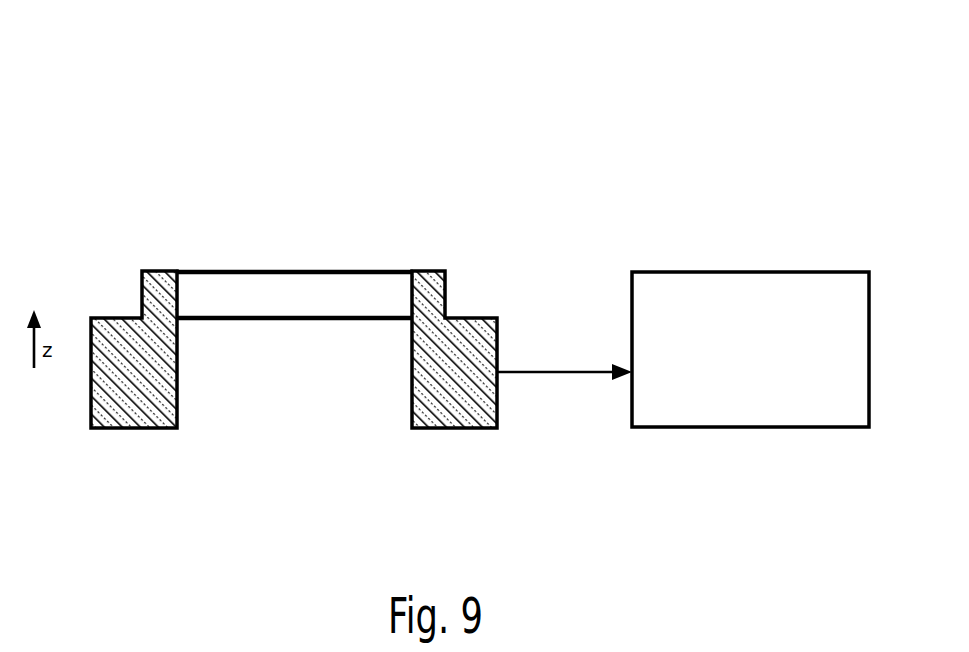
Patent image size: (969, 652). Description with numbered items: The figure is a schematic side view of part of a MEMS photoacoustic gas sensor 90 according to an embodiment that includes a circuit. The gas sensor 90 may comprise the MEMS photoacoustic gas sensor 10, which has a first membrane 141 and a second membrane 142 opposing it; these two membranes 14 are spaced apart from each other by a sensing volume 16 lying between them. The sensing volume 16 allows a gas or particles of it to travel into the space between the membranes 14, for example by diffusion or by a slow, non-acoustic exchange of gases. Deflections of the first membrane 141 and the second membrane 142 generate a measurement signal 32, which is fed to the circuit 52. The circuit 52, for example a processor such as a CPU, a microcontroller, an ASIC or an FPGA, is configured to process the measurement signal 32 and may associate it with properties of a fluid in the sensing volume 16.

The MEMS photoacoustic gas sensor 90 is at (832, 45).
The MEMS photoacoustic gas sensor 10 is at (398, 192).
The membranes 14 is at (294, 299).
The first membrane 141 is at (373, 320).
The second membrane 142 is at (371, 269).
The sensing volume 16 is at (236, 296).
The measurement signal 32 is at (562, 373).
The circuit 52 is at (752, 427).